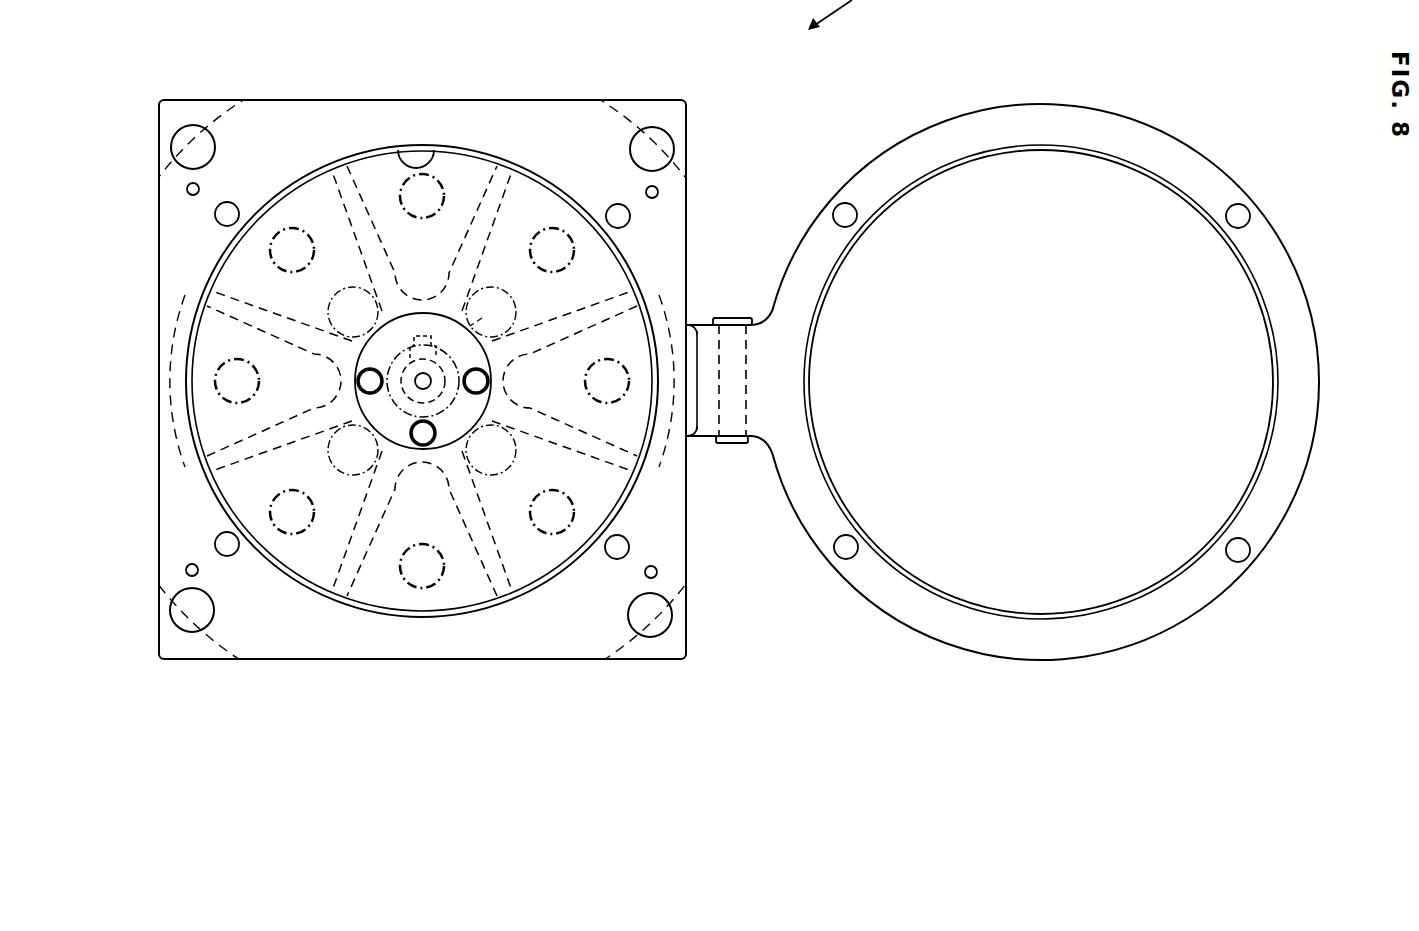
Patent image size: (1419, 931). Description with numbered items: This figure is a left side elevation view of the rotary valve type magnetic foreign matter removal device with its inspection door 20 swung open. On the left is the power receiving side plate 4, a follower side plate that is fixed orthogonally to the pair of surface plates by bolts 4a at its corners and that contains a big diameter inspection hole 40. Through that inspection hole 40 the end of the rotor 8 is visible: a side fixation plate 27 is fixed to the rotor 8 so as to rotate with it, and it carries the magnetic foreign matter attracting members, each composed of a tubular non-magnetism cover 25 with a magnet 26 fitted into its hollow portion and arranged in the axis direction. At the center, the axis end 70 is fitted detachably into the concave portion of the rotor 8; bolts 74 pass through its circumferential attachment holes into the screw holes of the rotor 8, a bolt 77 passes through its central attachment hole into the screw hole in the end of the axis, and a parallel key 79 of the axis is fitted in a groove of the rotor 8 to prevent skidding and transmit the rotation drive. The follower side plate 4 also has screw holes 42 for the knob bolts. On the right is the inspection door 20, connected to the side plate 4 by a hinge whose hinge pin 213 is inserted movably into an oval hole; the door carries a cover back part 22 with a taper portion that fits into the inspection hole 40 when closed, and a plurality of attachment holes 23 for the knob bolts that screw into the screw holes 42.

The power receiving side plate 4 is at (305, 143).
The bolts 4a is at (192, 148).
The rotor 8 is at (452, 605).
The inspection door 20 is at (1005, 128).
The cover back part 22 is at (1103, 197).
The attachment holes 23 is at (845, 215).
The non-magnetism cover 25 is at (235, 395).
The magnet 26 is at (240, 382).
The side fixation plate 27 is at (311, 550).
The inspection hole 40 is at (416, 166).
The screw holes 42 is at (222, 214).
The axis end 70 is at (414, 470).
The bolts 74 is at (357, 380).
The bolts 77 is at (483, 430).
The parallel key 79 is at (482, 318).
The hinge pin 213 is at (733, 318).